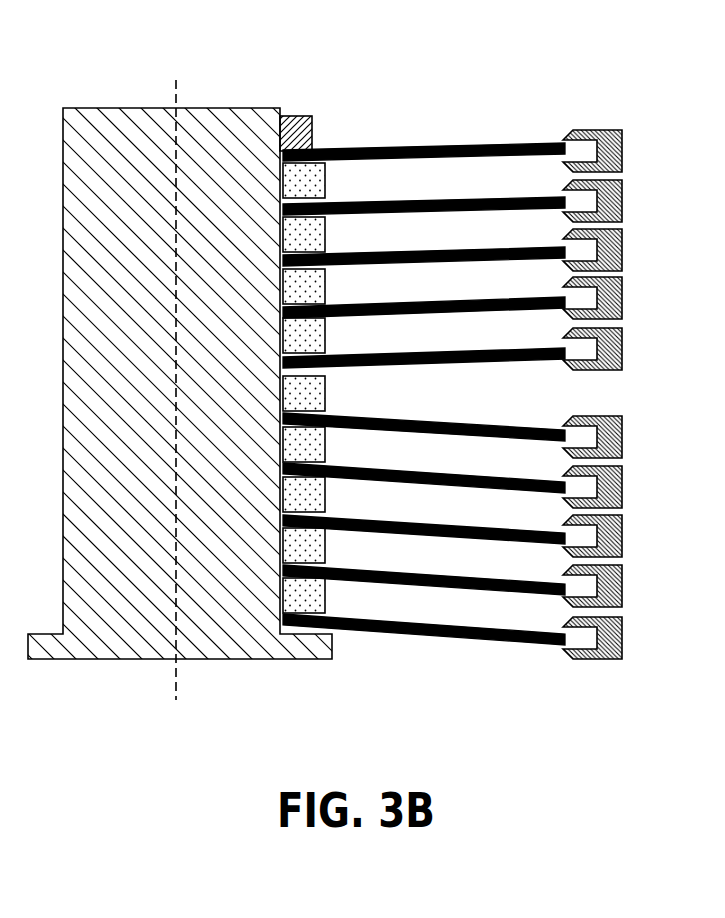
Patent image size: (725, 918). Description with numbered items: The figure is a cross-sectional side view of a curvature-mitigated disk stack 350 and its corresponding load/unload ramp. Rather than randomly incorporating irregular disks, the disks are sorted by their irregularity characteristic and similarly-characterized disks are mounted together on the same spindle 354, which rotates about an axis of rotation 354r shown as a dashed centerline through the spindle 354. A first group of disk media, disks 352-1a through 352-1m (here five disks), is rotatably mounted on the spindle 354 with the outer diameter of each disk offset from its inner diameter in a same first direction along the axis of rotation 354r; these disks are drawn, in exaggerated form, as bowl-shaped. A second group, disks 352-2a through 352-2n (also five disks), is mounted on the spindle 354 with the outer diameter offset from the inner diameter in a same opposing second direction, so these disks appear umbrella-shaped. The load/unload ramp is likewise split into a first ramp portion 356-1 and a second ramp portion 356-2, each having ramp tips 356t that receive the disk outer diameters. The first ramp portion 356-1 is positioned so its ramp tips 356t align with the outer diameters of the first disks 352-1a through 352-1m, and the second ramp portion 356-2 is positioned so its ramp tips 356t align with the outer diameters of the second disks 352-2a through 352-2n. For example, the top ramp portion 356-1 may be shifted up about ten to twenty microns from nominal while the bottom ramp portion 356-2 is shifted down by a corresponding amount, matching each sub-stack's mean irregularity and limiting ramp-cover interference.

The disk stack 350 is at (148, 58).
The spindle 354 is at (128, 110).
The axis of rotation 354r is at (176, 677).
The first disk of first group 352-1a is at (452, 147).
The last disk of first group 352-1m is at (384, 369).
The first disk of second group 352-2a is at (470, 426).
The last disk of second group 352-2n is at (433, 637).
The first ramp portion 356-1 is at (627, 123).
The second ramp portion 356-2 is at (627, 416).
The ramp tips 356t is at (563, 660).